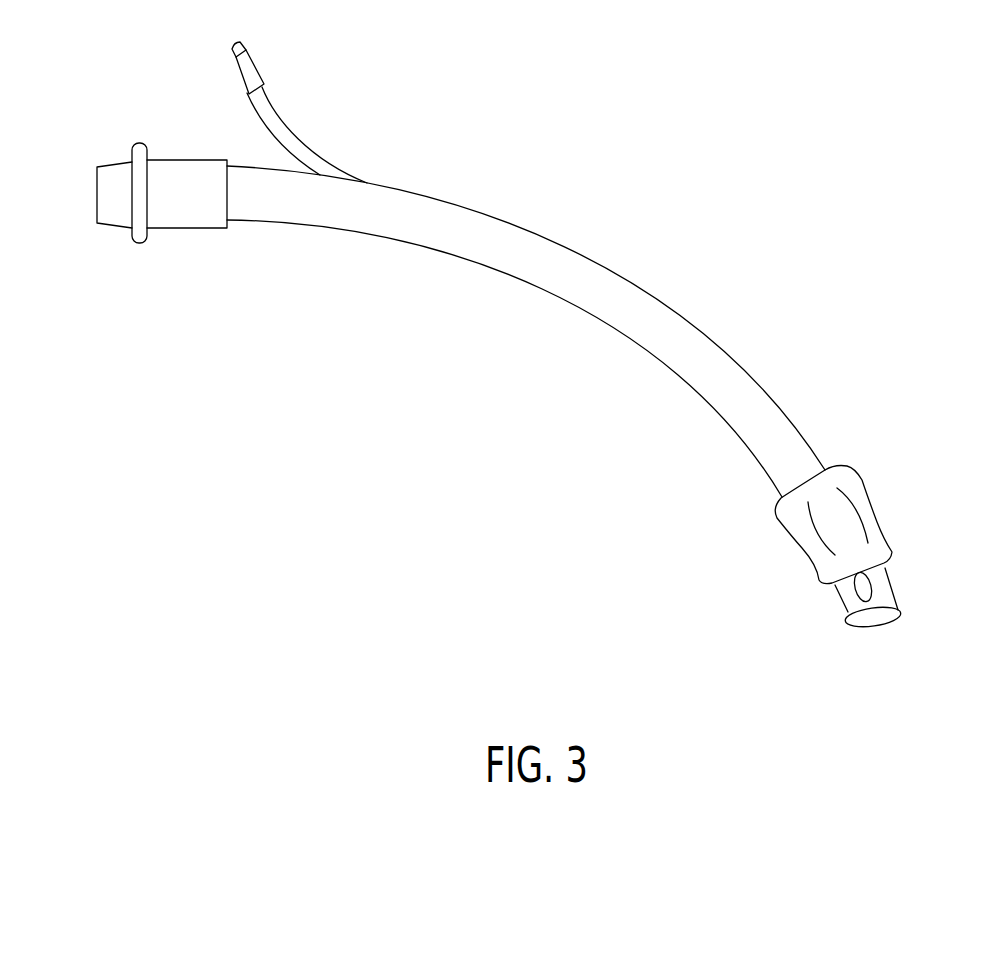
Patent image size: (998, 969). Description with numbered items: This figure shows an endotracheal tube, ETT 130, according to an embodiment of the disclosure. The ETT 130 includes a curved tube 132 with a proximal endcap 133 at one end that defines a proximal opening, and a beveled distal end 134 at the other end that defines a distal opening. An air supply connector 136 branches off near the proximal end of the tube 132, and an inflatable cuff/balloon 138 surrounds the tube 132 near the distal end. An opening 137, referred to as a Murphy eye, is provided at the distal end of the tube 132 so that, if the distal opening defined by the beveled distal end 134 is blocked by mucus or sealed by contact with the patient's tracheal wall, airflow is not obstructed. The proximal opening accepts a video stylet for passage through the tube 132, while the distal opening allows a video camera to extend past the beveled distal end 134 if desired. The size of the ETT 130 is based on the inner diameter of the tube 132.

The ETT 130 is at (641, 210).
The tube 132 is at (450, 202).
The proximal endcap 133 is at (123, 227).
The beveled distal end 134 is at (860, 625).
The air supply connector 136 is at (260, 65).
The opening 137 is at (877, 583).
The inflatable cuff/balloon 138 is at (853, 468).